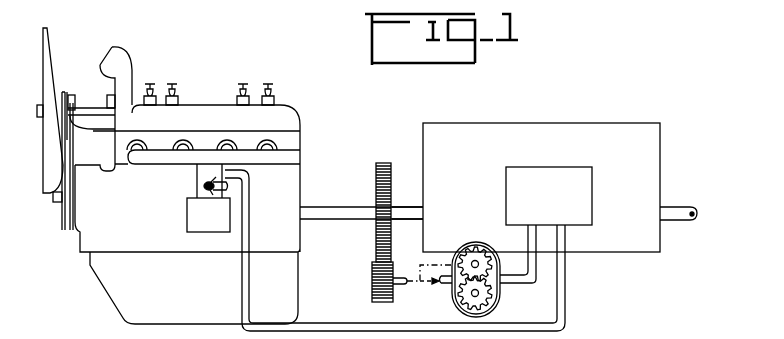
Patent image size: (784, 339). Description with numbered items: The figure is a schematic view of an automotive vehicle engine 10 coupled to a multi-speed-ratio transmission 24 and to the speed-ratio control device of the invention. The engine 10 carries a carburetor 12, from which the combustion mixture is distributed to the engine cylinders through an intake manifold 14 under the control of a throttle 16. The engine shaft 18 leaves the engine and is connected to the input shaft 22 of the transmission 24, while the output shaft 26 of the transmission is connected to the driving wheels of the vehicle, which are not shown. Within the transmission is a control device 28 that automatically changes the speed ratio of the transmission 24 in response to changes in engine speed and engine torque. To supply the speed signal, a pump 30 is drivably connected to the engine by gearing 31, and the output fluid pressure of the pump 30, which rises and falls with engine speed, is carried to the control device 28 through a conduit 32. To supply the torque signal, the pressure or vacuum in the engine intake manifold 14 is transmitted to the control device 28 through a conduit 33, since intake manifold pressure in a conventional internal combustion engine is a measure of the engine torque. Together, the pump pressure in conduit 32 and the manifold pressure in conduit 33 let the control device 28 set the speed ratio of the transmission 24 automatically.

The automotive vehicle engine 10 is at (285, 114).
The carburetor 12 is at (192, 222).
The intake manifold 14 is at (262, 158).
The throttle 16 is at (205, 184).
The engine shaft 18 is at (320, 207).
The input shaft 22 is at (404, 208).
The multi-speed-ratio transmission 24 is at (524, 135).
The output shaft 26 is at (682, 207).
The control device 28 is at (578, 172).
The pump 30 is at (500, 299).
The gearing 31 is at (376, 170).
The conduit 32 is at (521, 283).
The conduit 33 is at (308, 323).